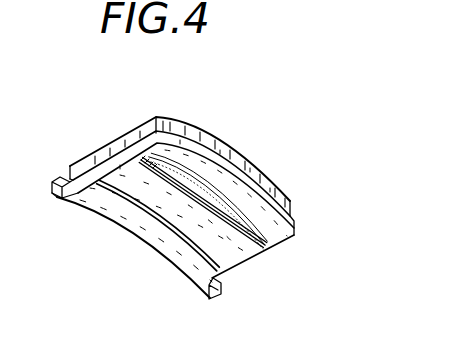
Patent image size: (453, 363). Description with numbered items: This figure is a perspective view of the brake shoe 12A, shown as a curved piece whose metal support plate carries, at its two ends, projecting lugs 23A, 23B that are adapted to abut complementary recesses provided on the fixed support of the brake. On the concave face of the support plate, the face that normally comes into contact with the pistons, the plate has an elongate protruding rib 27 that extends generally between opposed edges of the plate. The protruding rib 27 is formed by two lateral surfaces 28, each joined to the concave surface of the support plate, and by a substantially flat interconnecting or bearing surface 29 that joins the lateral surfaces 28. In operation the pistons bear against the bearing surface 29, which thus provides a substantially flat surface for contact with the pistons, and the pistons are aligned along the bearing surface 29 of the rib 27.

The brake shoe 12A is at (129, 231).
The projecting lug 23A is at (56, 196).
The projecting lug 23B is at (198, 300).
The protruding rib 27 is at (144, 191).
The lateral surfaces 28 is at (217, 201).
The bearing surface 29 is at (184, 250).